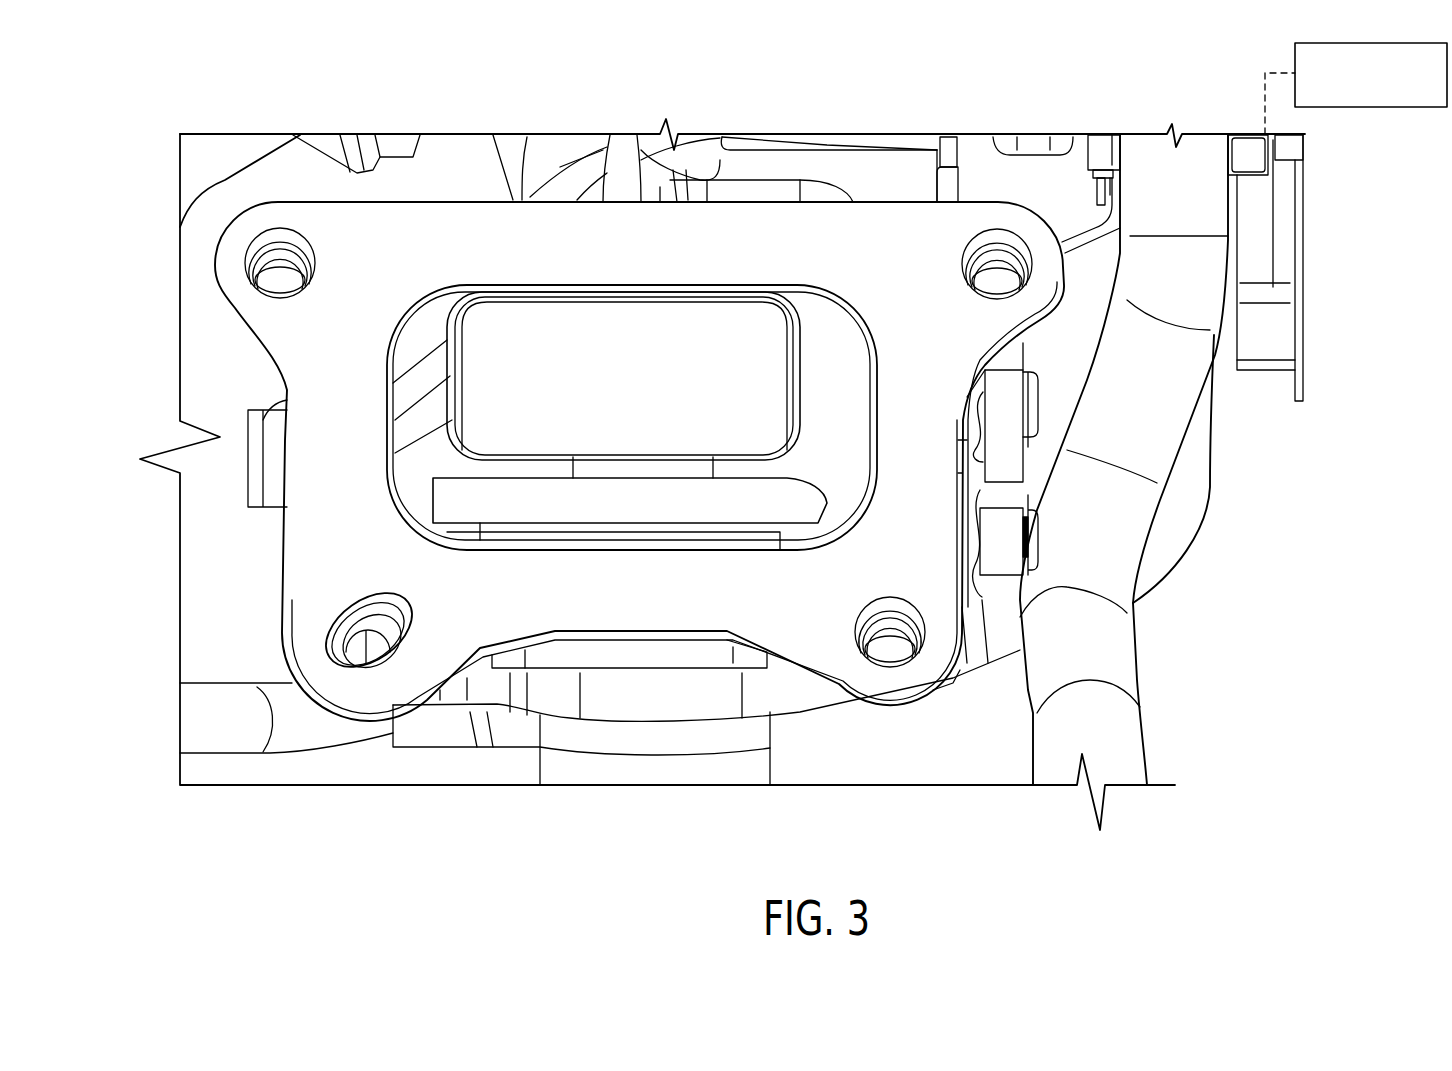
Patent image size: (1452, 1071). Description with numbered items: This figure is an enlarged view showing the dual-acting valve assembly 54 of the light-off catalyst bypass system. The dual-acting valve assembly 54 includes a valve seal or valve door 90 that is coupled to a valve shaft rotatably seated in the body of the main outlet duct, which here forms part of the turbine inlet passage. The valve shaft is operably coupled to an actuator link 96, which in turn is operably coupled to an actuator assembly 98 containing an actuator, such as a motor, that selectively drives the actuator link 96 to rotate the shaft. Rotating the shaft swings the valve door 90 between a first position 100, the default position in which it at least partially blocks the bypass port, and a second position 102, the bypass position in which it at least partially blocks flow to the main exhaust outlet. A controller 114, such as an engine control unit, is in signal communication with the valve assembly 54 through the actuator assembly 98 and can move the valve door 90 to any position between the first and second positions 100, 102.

The dual-acting valve assembly 54 is at (1045, 476).
The valve door 90 is at (483, 332).
The actuator link 96 is at (1092, 235).
The actuator assembly 98 is at (1283, 252).
The first position 100 is at (484, 500).
The second position 102 is at (540, 320).
The controller 114 is at (1336, 108).